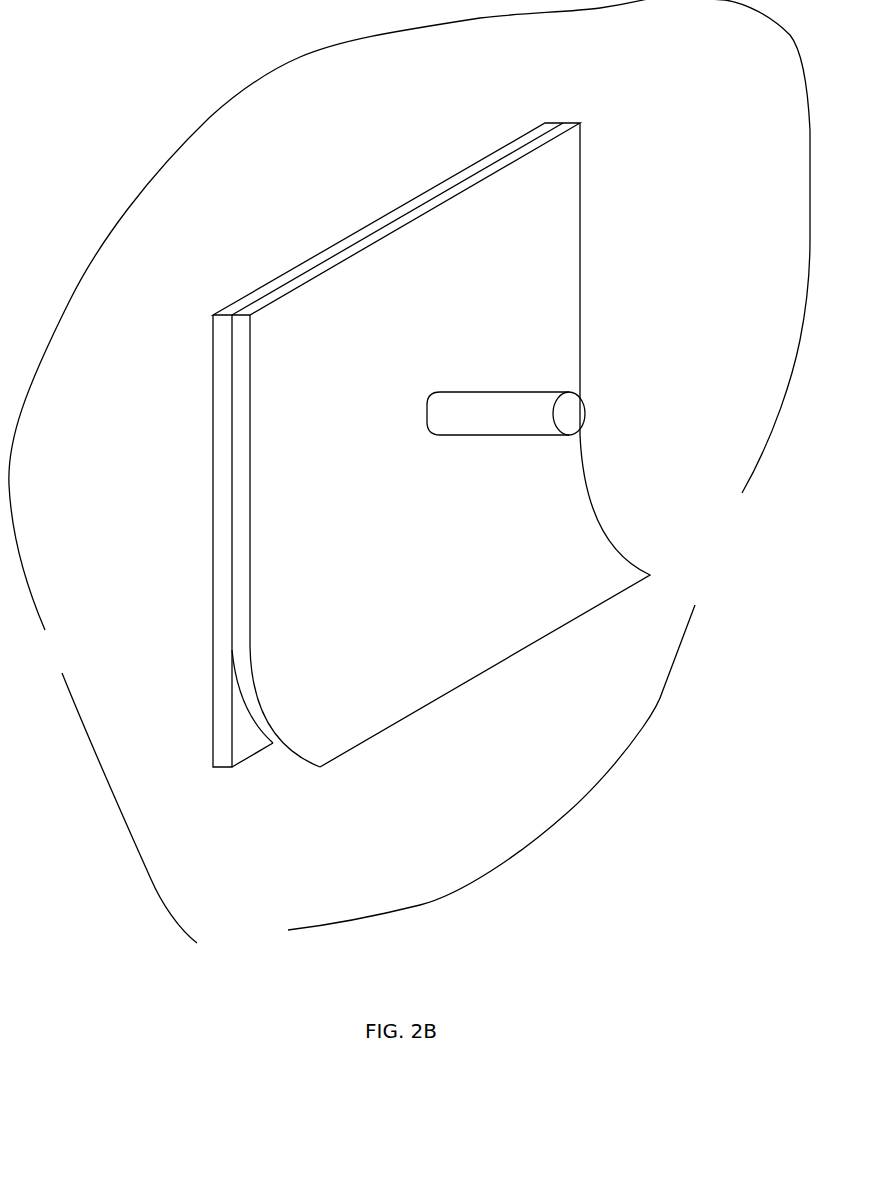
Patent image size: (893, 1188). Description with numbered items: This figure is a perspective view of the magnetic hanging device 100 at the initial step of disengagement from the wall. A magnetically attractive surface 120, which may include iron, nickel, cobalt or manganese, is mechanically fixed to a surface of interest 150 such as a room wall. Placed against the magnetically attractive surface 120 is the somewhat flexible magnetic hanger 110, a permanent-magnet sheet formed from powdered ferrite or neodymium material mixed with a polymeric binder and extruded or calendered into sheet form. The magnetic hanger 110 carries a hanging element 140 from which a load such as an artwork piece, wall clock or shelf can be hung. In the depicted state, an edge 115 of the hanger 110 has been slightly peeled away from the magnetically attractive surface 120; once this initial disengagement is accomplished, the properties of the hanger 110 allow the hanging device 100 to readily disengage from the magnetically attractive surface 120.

The hanging device 100 is at (340, 795).
The magnetic hanger 110 is at (565, 203).
The edge 115 is at (293, 749).
The magnetically attractive surface 120 is at (213, 467).
The hanging element 140 is at (567, 412).
The surface of interest 150 is at (562, 785).